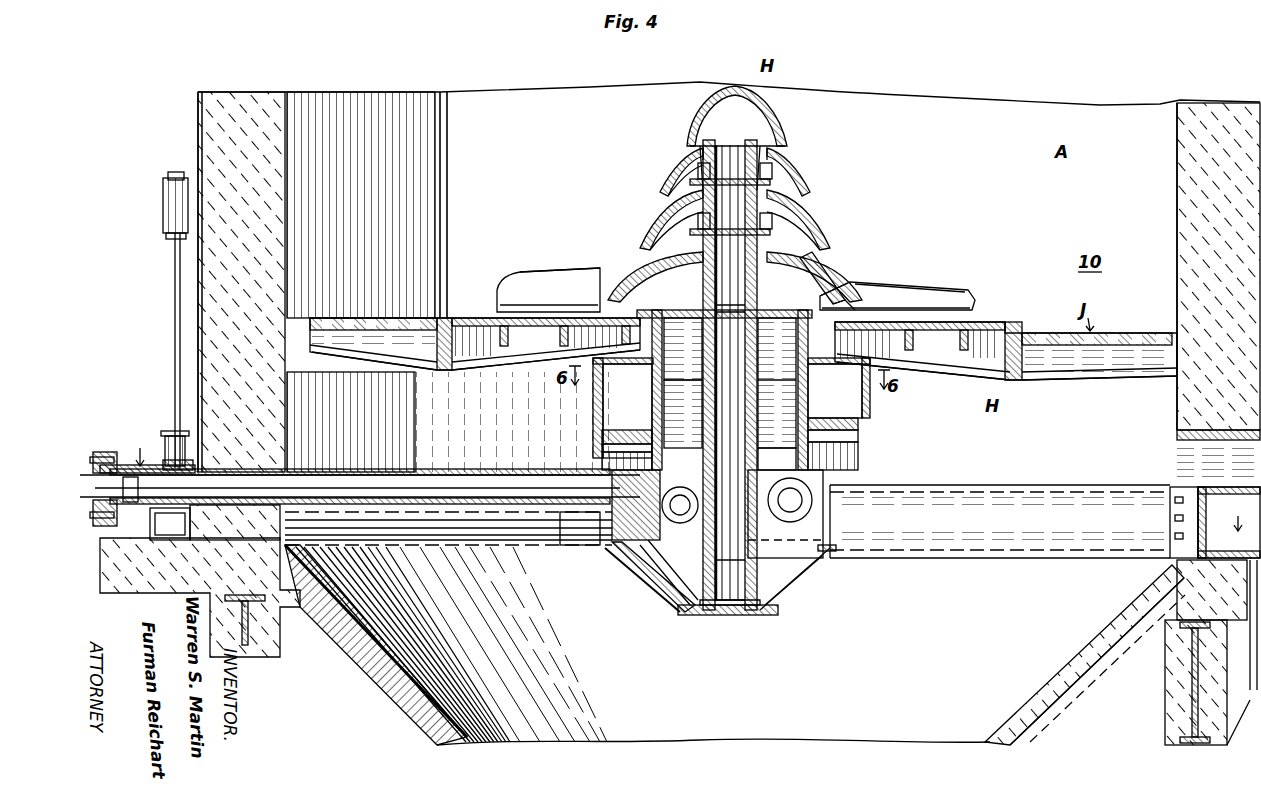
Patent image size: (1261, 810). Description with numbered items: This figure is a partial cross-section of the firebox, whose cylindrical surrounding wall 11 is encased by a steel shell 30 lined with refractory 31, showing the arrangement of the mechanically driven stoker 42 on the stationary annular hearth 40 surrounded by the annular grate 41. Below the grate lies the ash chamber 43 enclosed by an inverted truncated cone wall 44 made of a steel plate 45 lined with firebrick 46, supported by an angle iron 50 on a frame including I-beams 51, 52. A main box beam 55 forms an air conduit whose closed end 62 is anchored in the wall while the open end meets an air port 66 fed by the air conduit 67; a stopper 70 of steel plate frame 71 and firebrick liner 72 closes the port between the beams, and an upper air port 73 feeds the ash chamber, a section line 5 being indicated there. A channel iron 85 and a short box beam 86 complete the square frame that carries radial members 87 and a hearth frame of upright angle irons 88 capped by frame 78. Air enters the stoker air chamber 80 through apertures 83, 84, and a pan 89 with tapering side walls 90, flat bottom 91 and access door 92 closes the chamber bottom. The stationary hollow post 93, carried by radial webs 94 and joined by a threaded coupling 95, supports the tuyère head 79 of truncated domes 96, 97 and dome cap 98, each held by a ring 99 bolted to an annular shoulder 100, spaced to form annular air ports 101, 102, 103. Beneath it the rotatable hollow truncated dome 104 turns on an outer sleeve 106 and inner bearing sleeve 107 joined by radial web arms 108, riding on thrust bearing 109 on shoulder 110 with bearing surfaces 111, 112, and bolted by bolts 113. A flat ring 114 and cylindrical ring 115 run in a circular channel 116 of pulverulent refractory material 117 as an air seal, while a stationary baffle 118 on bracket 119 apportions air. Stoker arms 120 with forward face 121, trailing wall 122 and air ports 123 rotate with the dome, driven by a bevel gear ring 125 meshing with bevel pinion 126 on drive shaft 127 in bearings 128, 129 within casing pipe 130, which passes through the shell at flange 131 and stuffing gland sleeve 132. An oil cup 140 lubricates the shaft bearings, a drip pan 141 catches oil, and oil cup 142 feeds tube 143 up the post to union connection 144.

The section line 5 is at (688, 485).
The cylindrical surrounding wall 11 is at (1218, 105).
The steel shell 30 is at (198, 105).
The refractory 31 is at (262, 97).
The stationary annular hearth 40 is at (480, 366).
The annular grate 41 is at (1140, 333).
The mechanical stoker 42 is at (780, 106).
The ash chamber 43 is at (872, 698).
The wall 44 is at (996, 723).
The steel plate 45 is at (1050, 708).
The firebrick 46 is at (1100, 675).
The angle iron 50 is at (1175, 636).
The I-beam 51 is at (1192, 700).
The I-beam 52 is at (279, 634).
The box beam 55 is at (1050, 481).
The end 62 is at (198, 428).
The air port 66 is at (1229, 522).
The air conduit 67 is at (1240, 720).
The stopper 70 is at (1162, 524).
The steel plate frame 71 is at (1197, 532).
The firebrick liner 72 is at (1174, 496).
The upper air port 73 is at (1218, 456).
The frame 78 is at (592, 392).
The tuyère head 79 is at (800, 135).
The stoker air chamber 80 is at (752, 604).
The aperture 83 is at (785, 514).
The aperture 84 is at (655, 505).
The channel iron 85 is at (836, 560).
The short box beam 86 is at (556, 548).
The main frame radial members 87 is at (420, 370).
The upright angle irons 88 is at (650, 413).
The pan 89 is at (776, 613).
The tapering side walls 90 is at (796, 578).
The flat bottom 91 is at (720, 618).
The access door 92 is at (668, 604).
The stationary hollow post 93 is at (758, 618).
The radial webs 94 is at (818, 562).
The threaded coupling 95 is at (748, 298).
The truncated dome 96 is at (648, 216).
The truncated dome 97 is at (672, 166).
The dome cap 98 is at (700, 108).
The ring 99 is at (772, 170).
The annular shoulder 100 is at (772, 184).
The annular air port 101 is at (642, 262).
The annular air port 102 is at (662, 192).
The annular air port 103 is at (690, 146).
The rotatable hollow truncated dome 104 is at (814, 283).
The outer sleeve 106 is at (812, 422).
The inner bearing sleeve 107 is at (760, 432).
The radial web arms 108 is at (660, 380).
The thrust bearing 109 is at (779, 455).
The annular shoulder 110 is at (788, 514).
The bearing surface 111 is at (683, 414).
The bearing surface 112 is at (683, 349).
The bolts 113 is at (846, 294).
The annular flat ring 114 is at (602, 434).
The cylindrical ring 115 is at (602, 447).
The circular channel 116 is at (602, 461).
The pulverulent refractory material 117 is at (850, 470).
The stationary baffle 118 is at (838, 296).
The bracket 119 is at (600, 270).
The stoker arms 120 is at (511, 265).
The forward face 121 is at (500, 283).
The trailing wall 122 is at (972, 310).
The air ports 123 is at (937, 286).
The bevel gear ring 125 is at (850, 456).
The bevel pinion 126 is at (615, 545).
The drive shaft 127 is at (478, 532).
The bearing 128 is at (560, 532).
The bearing 129 is at (126, 506).
The casing pipe 130 is at (412, 476).
The flange 131 is at (102, 452).
The stuffing gland sleeve 132 is at (95, 457).
The oil cup 140 is at (168, 436).
The drip pan 141 is at (660, 588).
The oil cup 142 is at (163, 197).
The tube 143 is at (175, 278).
The union connection 144 is at (745, 312).